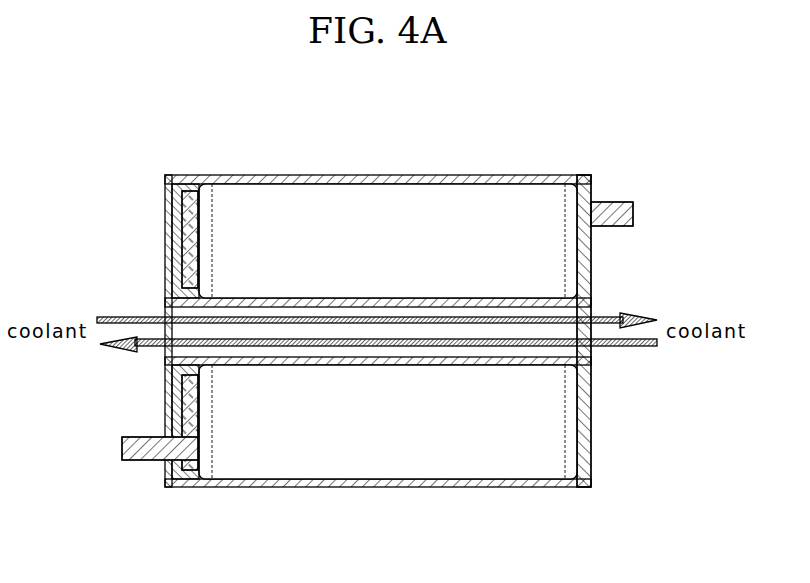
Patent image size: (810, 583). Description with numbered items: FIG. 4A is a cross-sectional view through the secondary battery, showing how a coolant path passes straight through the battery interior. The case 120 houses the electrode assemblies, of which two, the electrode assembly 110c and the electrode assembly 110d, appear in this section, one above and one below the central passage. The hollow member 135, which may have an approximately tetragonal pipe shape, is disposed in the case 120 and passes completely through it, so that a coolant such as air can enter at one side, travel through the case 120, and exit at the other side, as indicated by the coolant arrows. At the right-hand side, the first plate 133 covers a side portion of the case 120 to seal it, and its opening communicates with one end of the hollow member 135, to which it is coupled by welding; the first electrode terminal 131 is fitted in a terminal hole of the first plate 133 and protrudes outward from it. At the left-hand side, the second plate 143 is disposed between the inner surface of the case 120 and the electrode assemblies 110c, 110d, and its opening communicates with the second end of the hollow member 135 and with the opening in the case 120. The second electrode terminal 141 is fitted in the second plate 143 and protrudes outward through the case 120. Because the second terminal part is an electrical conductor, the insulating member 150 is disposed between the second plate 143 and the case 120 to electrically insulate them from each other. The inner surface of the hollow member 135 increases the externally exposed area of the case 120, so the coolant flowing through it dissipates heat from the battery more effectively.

The electrode assembly 110c is at (407, 200).
The electrode assembly 110d is at (434, 462).
The case 120 is at (283, 490).
The first electrode terminal 131 is at (612, 202).
The first plate 133 is at (583, 433).
The hollow member 135 is at (512, 363).
The second electrode terminal 141 is at (122, 452).
The second plate 143 is at (178, 203).
The insulating member 150 is at (174, 234).